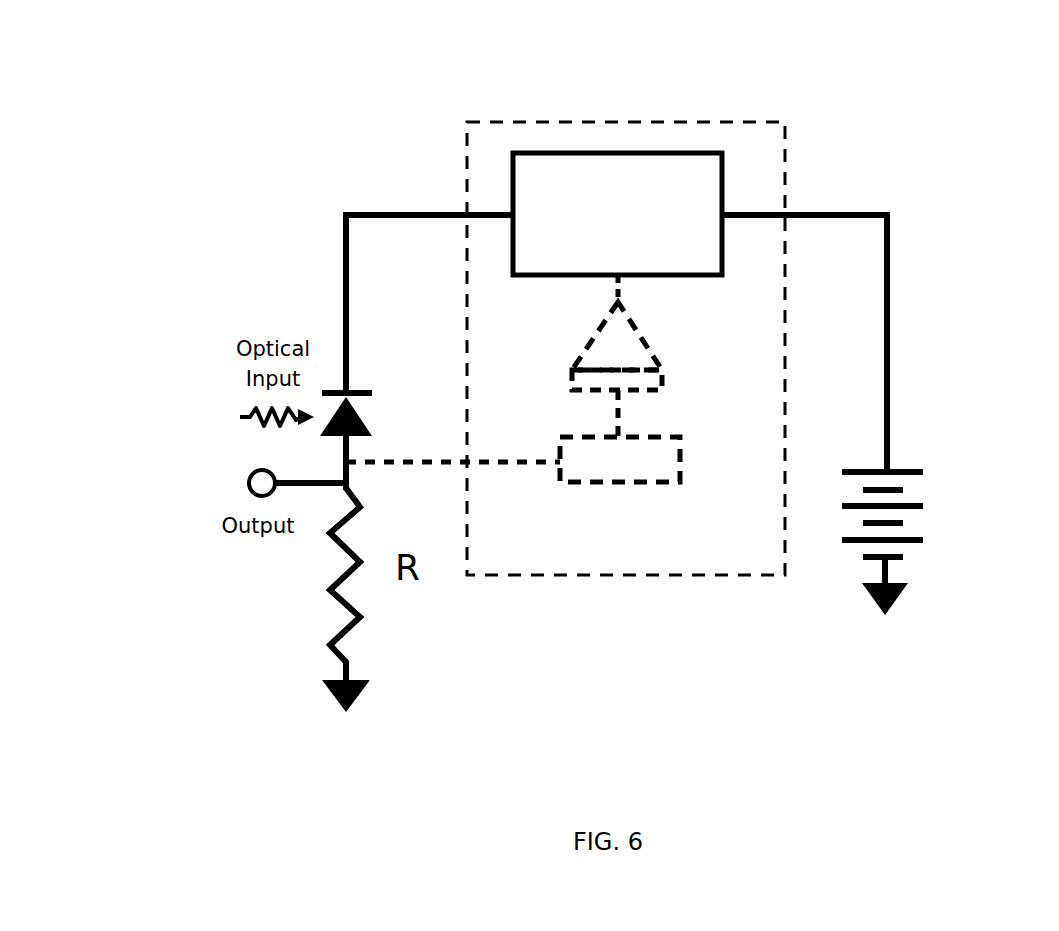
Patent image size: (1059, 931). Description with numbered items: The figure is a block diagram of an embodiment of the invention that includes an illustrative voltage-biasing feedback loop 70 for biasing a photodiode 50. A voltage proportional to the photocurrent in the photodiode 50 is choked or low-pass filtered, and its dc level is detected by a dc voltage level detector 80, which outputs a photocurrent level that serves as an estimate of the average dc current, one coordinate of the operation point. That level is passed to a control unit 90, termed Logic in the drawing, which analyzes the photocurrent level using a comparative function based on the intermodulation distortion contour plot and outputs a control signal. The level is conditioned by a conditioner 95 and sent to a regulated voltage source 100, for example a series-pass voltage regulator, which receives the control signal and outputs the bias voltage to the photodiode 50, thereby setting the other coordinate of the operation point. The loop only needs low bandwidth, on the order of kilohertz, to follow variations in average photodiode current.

The photodiode 50 is at (322, 428).
The voltage-biasing feedback loop 70 is at (785, 147).
The regulated voltage source 100 is at (723, 203).
The conditioner 95 is at (635, 323).
The control unit 90 is at (665, 380).
The dc voltage level detector 80 is at (680, 452).